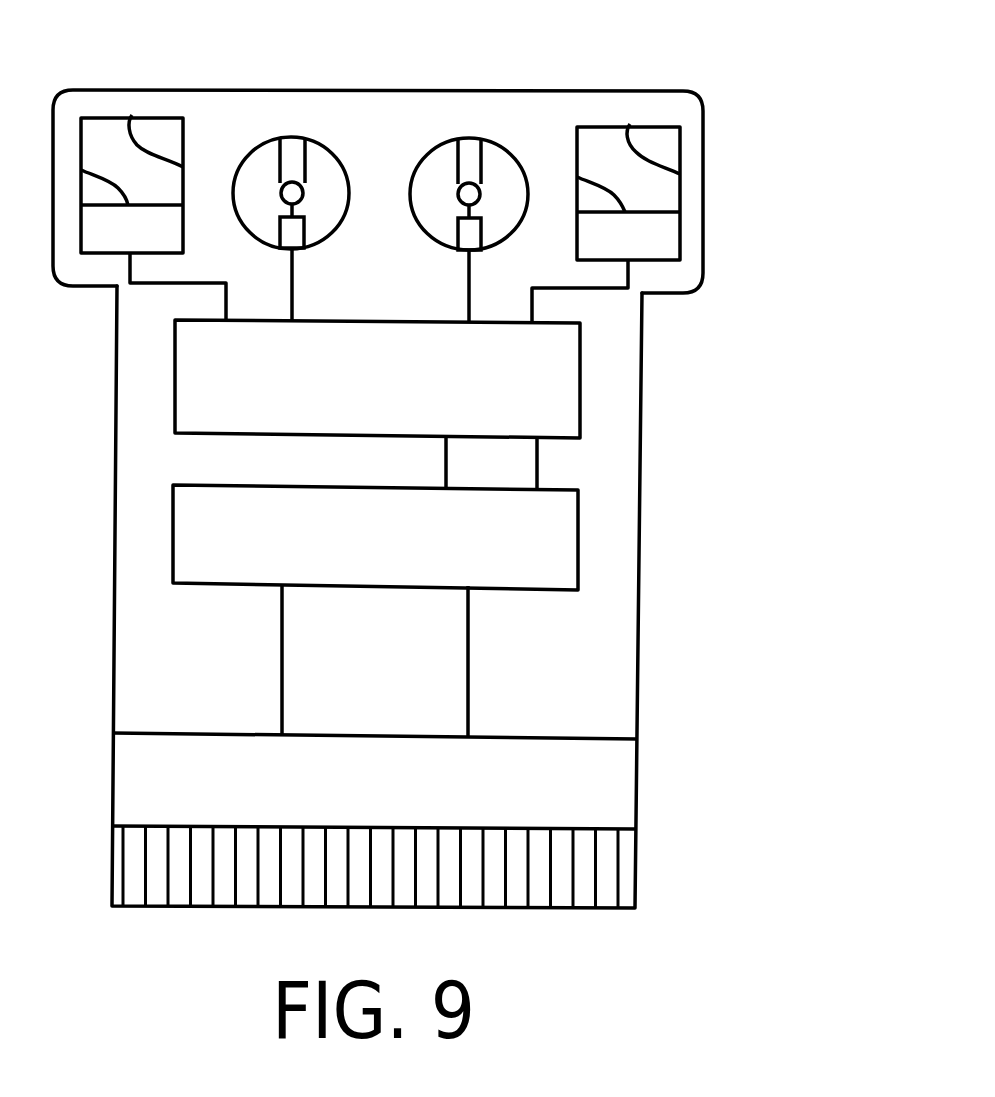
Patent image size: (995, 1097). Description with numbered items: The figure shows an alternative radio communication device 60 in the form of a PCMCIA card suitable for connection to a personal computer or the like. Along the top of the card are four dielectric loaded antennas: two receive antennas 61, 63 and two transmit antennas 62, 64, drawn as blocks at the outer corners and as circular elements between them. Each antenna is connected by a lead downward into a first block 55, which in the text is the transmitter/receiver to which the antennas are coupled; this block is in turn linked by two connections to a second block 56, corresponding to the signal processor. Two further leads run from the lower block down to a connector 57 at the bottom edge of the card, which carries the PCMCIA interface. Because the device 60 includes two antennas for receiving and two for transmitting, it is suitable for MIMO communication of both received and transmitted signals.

The first processing unit 55 is at (175, 378).
The second processing unit 56 is at (173, 531).
The connector 57 is at (637, 780).
The radio communication device 60 is at (785, 462).
The receive antenna 61 is at (107, 118).
The transmit antenna 62 is at (295, 137).
The receive antenna 63 is at (467, 138).
The transmit antenna 64 is at (656, 127).